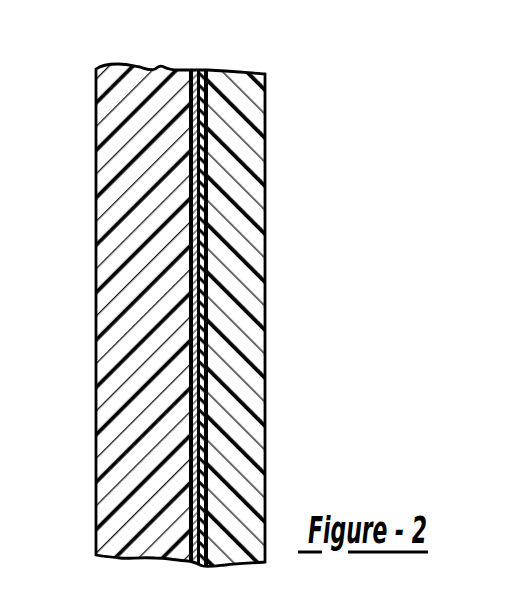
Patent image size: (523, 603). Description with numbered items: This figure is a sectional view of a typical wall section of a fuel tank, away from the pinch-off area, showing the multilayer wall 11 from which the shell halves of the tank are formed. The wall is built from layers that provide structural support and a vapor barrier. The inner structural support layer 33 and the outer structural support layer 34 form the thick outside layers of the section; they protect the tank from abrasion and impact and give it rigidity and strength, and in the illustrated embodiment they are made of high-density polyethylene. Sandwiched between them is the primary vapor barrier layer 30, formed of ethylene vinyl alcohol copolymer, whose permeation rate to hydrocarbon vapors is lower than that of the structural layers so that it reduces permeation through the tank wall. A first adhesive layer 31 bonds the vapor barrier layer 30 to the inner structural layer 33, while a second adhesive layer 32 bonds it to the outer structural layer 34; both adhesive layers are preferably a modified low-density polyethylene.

The multilayer wall 11 is at (311, 98).
The primary vapor barrier layer 30 is at (191, 289).
The first adhesive layer 31 is at (208, 272).
The second adhesive layer 32 is at (192, 290).
The inner structural support layer 33 is at (247, 157).
The outer structural support layer 34 is at (118, 163).